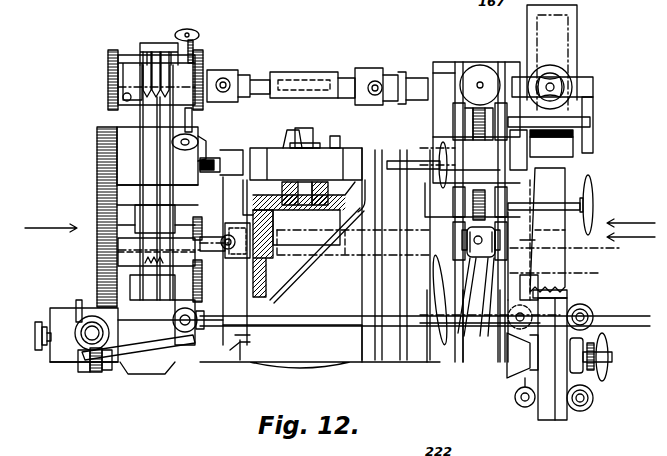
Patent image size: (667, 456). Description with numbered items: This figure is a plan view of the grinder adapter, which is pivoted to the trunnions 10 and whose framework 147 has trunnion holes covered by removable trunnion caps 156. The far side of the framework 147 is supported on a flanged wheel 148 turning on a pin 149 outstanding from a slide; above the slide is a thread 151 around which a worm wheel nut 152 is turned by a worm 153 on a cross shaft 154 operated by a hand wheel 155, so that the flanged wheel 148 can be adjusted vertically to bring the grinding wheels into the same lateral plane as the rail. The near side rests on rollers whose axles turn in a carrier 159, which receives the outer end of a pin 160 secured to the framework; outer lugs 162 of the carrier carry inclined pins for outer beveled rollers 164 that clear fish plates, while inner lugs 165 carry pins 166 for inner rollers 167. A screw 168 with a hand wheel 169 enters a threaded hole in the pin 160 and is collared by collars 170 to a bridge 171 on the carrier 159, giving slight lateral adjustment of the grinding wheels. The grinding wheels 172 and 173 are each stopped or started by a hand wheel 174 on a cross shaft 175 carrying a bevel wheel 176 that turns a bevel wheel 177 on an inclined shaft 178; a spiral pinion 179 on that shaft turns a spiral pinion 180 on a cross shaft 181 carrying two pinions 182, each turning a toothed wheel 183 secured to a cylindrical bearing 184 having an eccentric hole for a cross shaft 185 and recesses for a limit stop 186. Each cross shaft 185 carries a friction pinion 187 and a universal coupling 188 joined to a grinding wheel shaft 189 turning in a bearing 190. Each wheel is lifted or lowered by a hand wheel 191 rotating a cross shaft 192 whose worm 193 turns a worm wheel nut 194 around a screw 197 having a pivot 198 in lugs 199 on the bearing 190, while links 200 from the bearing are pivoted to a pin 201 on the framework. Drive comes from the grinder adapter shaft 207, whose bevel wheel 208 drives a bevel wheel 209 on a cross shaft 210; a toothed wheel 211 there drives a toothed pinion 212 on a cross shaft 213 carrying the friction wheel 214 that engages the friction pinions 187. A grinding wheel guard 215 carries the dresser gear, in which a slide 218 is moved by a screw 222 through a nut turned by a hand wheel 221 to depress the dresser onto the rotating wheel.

The trunnions 10 is at (300, 140).
The framework 147 is at (370, 160).
The flanged wheel 148 is at (62, 312).
The pin 149 is at (38, 345).
The thread 151 is at (82, 360).
The worm wheel nut 152 is at (75, 325).
The worm 153 is at (95, 372).
The cross shaft 154 is at (165, 345).
The hand wheel 155 is at (410, 340).
The trunnion caps 156 is at (294, 255).
The carrier 159 is at (555, 400).
The pin 160 is at (520, 360).
The outer lugs 162 is at (590, 312).
The outer beveled rollers 164 is at (588, 320).
The inner lugs 165 is at (594, 312).
The pins 166 is at (520, 400).
The inner rollers 167 is at (530, 305).
The screw 168 is at (585, 372).
The hand wheel 169 is at (596, 348).
The collars 170 is at (606, 340).
The bridge 171 is at (612, 356).
The grinding wheel 172 is at (548, 234).
The grinding wheel 173 is at (553, 30).
The hand wheel 174 is at (438, 160).
The cross shaft 175 is at (248, 148).
The bevel wheel 176 is at (218, 155).
The bevel wheel 177 is at (208, 132).
The inclined shaft 178 is at (198, 33).
The spiral pinion 179 is at (186, 29).
The spiral pinion 180 is at (193, 52).
The cross shaft 181 is at (150, 50).
The pinions 182 is at (110, 52).
The toothed wheel 183 is at (110, 62).
The cylindrical bearing 184 is at (135, 216).
The cross shaft 185 is at (128, 78).
The limit stop 186 is at (125, 93).
The friction pinion 187 is at (140, 50).
The universal coupling 188 is at (308, 78).
The grinding wheel shaft 189 is at (570, 255).
The bearing 190 is at (440, 62).
The hand wheel 191 is at (565, 122).
The cross shaft 192 is at (565, 100).
The worm 193 is at (473, 120).
The worm wheel nut 194 is at (474, 65).
The screw 197 is at (482, 84).
The pivot 198 is at (485, 258).
The lugs 199 is at (468, 255).
The links 200 is at (415, 78).
The pin 201 is at (560, 150).
The grinder adapter shaft 207 is at (300, 140).
The bevel wheel 208 is at (340, 145).
The bevel wheel 209 is at (262, 340).
The cross shaft 210 is at (240, 350).
The toothed wheel 211 is at (130, 285).
The toothed pinion 212 is at (120, 174).
The cross shaft 213 is at (133, 163).
The friction wheel 214 is at (150, 122).
The grinding wheel guard 215 is at (565, 13).
The slide 218 is at (572, 88).
The hand wheel 221 is at (565, 82).
The screw 222 is at (552, 84).